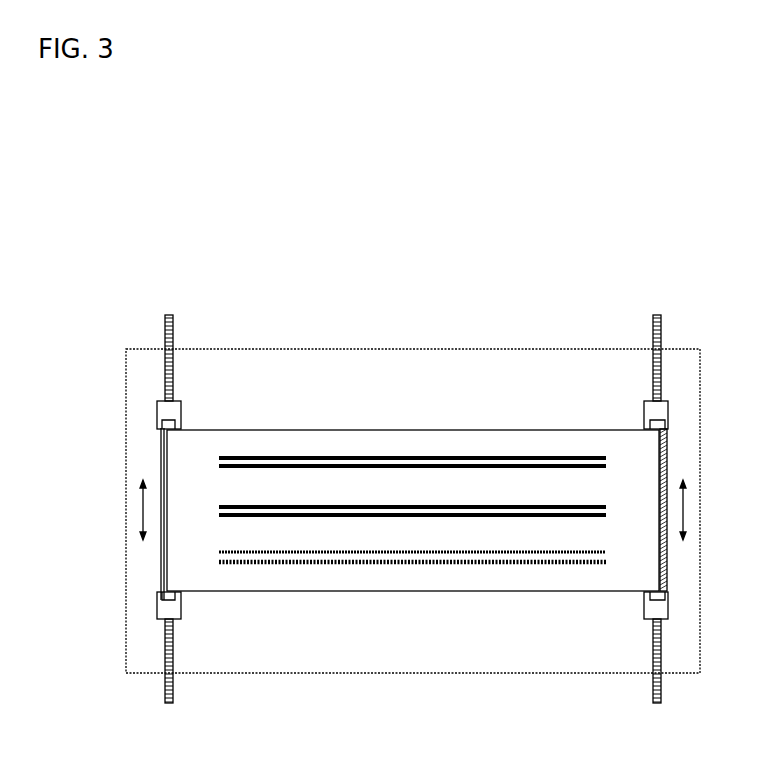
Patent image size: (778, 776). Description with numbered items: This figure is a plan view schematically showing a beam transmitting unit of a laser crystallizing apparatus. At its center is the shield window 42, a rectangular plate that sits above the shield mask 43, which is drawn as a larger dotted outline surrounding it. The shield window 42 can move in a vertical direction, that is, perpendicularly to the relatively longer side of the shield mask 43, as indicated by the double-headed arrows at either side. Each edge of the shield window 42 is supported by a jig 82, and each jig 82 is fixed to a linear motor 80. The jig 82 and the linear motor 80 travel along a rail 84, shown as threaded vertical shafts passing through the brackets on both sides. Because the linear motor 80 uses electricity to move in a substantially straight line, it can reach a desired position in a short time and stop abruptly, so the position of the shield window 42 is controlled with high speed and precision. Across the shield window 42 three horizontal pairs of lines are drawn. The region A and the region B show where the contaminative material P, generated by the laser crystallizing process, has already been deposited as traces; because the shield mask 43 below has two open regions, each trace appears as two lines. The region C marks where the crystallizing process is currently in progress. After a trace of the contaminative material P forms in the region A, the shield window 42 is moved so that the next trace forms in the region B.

The shield window 42 is at (243, 437).
The shield mask 43 is at (307, 655).
The linear motor 80 is at (158, 464).
The jig 82 is at (157, 432).
The rail 84 is at (168, 665).
The contaminative material P is at (476, 432).
The region A is at (609, 464).
The region B is at (609, 514).
The region C is at (609, 561).